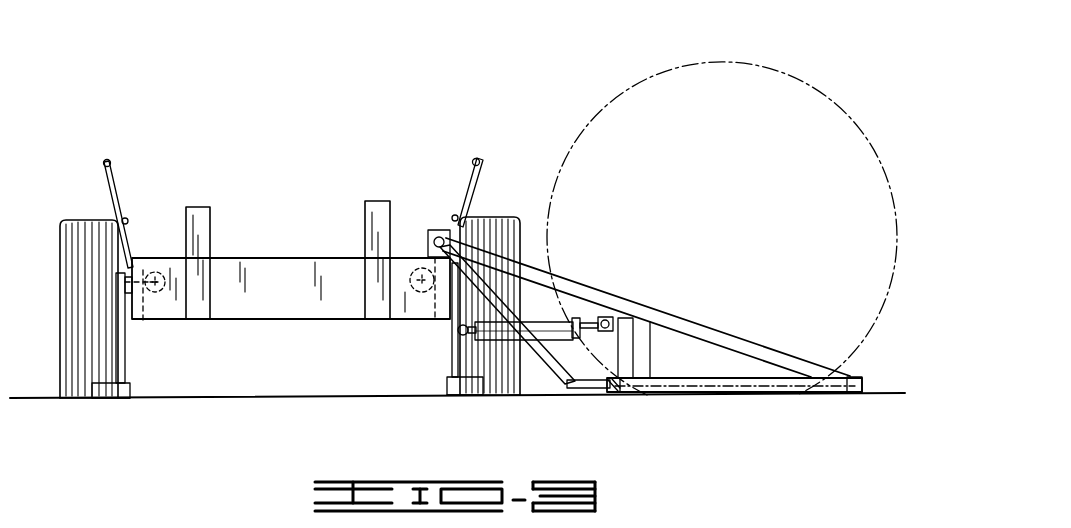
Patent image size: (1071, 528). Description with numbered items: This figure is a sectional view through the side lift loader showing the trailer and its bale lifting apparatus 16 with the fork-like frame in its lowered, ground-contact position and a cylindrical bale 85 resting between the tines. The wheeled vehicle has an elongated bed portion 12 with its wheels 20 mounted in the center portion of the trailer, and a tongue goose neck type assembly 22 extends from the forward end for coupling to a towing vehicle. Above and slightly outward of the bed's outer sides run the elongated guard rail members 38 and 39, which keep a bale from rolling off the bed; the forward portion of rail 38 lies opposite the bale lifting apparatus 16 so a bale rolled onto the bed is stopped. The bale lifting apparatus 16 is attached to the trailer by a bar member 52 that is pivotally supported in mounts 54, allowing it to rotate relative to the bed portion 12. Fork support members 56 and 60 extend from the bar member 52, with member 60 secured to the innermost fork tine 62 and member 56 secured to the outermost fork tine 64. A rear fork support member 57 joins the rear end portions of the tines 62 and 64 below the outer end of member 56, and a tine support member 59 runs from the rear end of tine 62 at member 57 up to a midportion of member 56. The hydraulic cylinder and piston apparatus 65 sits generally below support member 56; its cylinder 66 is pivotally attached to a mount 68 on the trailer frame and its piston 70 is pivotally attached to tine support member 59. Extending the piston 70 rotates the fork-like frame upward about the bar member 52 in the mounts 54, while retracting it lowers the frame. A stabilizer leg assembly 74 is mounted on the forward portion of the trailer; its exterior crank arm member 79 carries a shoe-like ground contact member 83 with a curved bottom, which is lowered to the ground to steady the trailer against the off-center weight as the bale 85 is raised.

The bed portion 12 is at (161, 255).
The bale lifting apparatus 16 is at (726, 308).
The wheels 20 is at (62, 233).
The tongue goose neck type assembly 22 is at (372, 215).
The elongated member 38 is at (100, 176).
The elongated member 39 is at (483, 170).
The bar member 52 is at (438, 236).
The mounts 54 is at (433, 238).
The fork support member 56 is at (732, 340).
The rear fork support member 57 is at (748, 383).
The tine support member 59 is at (633, 352).
The fork support member 60 is at (560, 375).
The fork tine 62 is at (625, 384).
The fork tine 64 is at (855, 378).
The hydraulic cylinder and piston apparatus 65 is at (540, 298).
The cylinder 66 is at (596, 318).
The mount 68 is at (458, 331).
The piston 70 is at (606, 315).
The stabilizer leg assembly 74 is at (118, 402).
The arm member 79 is at (125, 350).
The ground contact member 83 is at (118, 388).
The bale 85 is at (742, 62).